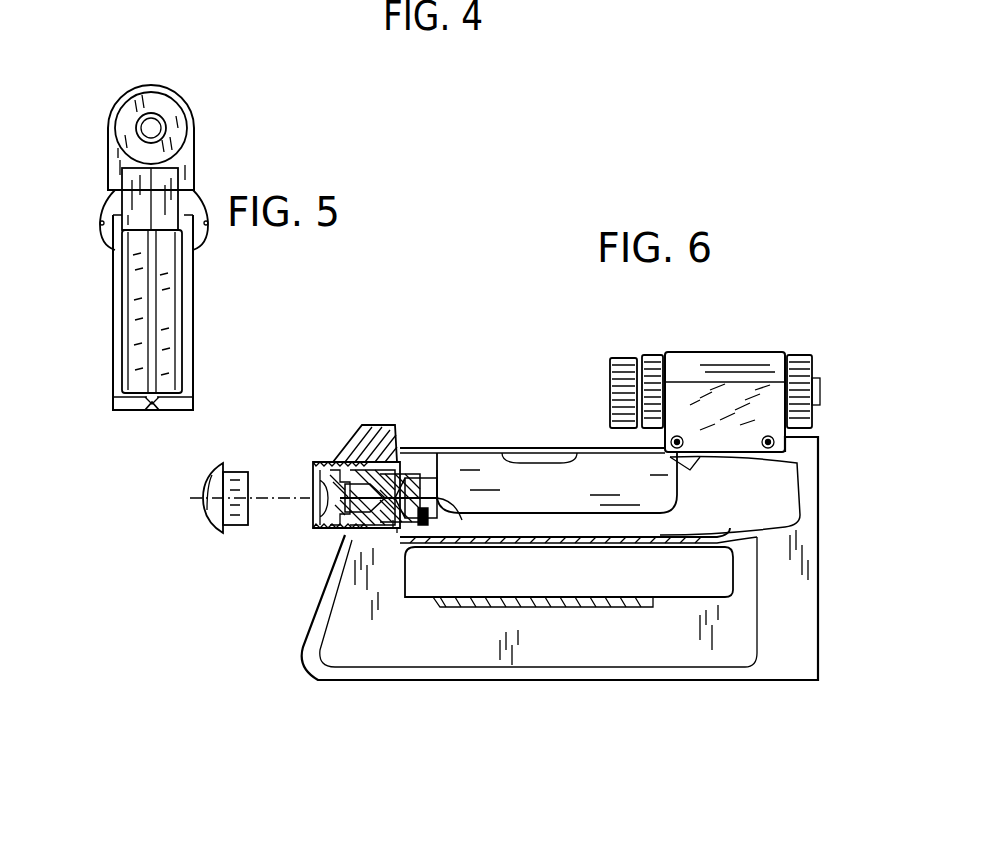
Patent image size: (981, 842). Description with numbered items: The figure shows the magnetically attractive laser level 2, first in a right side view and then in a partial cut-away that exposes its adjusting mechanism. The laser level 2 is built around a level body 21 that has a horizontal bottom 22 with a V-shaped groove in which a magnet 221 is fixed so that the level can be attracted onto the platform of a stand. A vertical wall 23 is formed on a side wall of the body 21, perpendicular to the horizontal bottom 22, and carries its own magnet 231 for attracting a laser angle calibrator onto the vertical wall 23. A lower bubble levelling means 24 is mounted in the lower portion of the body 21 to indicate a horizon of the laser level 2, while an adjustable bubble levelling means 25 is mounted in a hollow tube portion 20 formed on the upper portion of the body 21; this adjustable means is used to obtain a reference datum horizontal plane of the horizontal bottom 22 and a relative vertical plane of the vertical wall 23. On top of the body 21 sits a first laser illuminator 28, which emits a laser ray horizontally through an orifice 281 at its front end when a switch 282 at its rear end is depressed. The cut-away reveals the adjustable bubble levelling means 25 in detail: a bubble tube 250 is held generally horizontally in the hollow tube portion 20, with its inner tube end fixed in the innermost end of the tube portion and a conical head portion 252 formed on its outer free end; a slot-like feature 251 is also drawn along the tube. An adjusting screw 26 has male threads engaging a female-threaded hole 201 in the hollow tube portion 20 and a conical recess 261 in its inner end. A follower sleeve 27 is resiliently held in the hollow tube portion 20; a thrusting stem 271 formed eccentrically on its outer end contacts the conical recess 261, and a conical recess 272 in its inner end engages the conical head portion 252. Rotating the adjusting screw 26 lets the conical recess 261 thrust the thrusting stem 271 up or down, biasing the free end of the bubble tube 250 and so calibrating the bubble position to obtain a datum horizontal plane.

In FIG. 5, the magnetically attractive laser level 2 is at (100, 285).
In FIG. 6, the magnetically attractive laser level 2 is at (427, 687).
In FIG. 5, the hollow tube portion 20 is at (110, 200).
In FIG. 6, the hollow tube portion 20 is at (410, 460).
In FIG. 6, the female-threaded hole 201 is at (338, 460).
In FIG. 6, the level body 21 is at (803, 642).
In FIG. 5, the horizontal bottom 22 is at (123, 413).
In FIG. 6, the horizontal bottom 22 is at (565, 680).
In FIG. 5, the magnet 221 is at (150, 412).
In FIG. 5, the vertical wall 23 is at (118, 360).
In FIG. 6, the vertical wall 23 is at (820, 568).
In FIG. 5, the magnet 231 is at (133, 302).
In FIG. 6, the lower bubble levelling means 24 is at (600, 582).
In FIG. 6, the adjustable bubble levelling means 25 is at (488, 473).
In FIG. 6, the bubble tube 250 is at (457, 470).
In FIG. 6, the slot 251 is at (547, 445).
In FIG. 6, the conical head portion 252 is at (462, 520).
In FIG. 6, the adjusting screw 26 is at (312, 477).
In FIG. 6, the conical recess 261 is at (355, 467).
In FIG. 6, the follower sleeve 27 is at (390, 467).
In FIG. 6, the thrusting stem 271 is at (393, 520).
In FIG. 6, the conical recess 272 is at (397, 533).
In FIG. 5, the first laser illuminator 28 is at (117, 97).
In FIG. 6, the first laser illuminator 28 is at (718, 370).
In FIG. 6, the orifice 281 is at (608, 400).
In FIG. 5, the switch 282 is at (158, 118).
In FIG. 6, the switch 282 is at (820, 390).